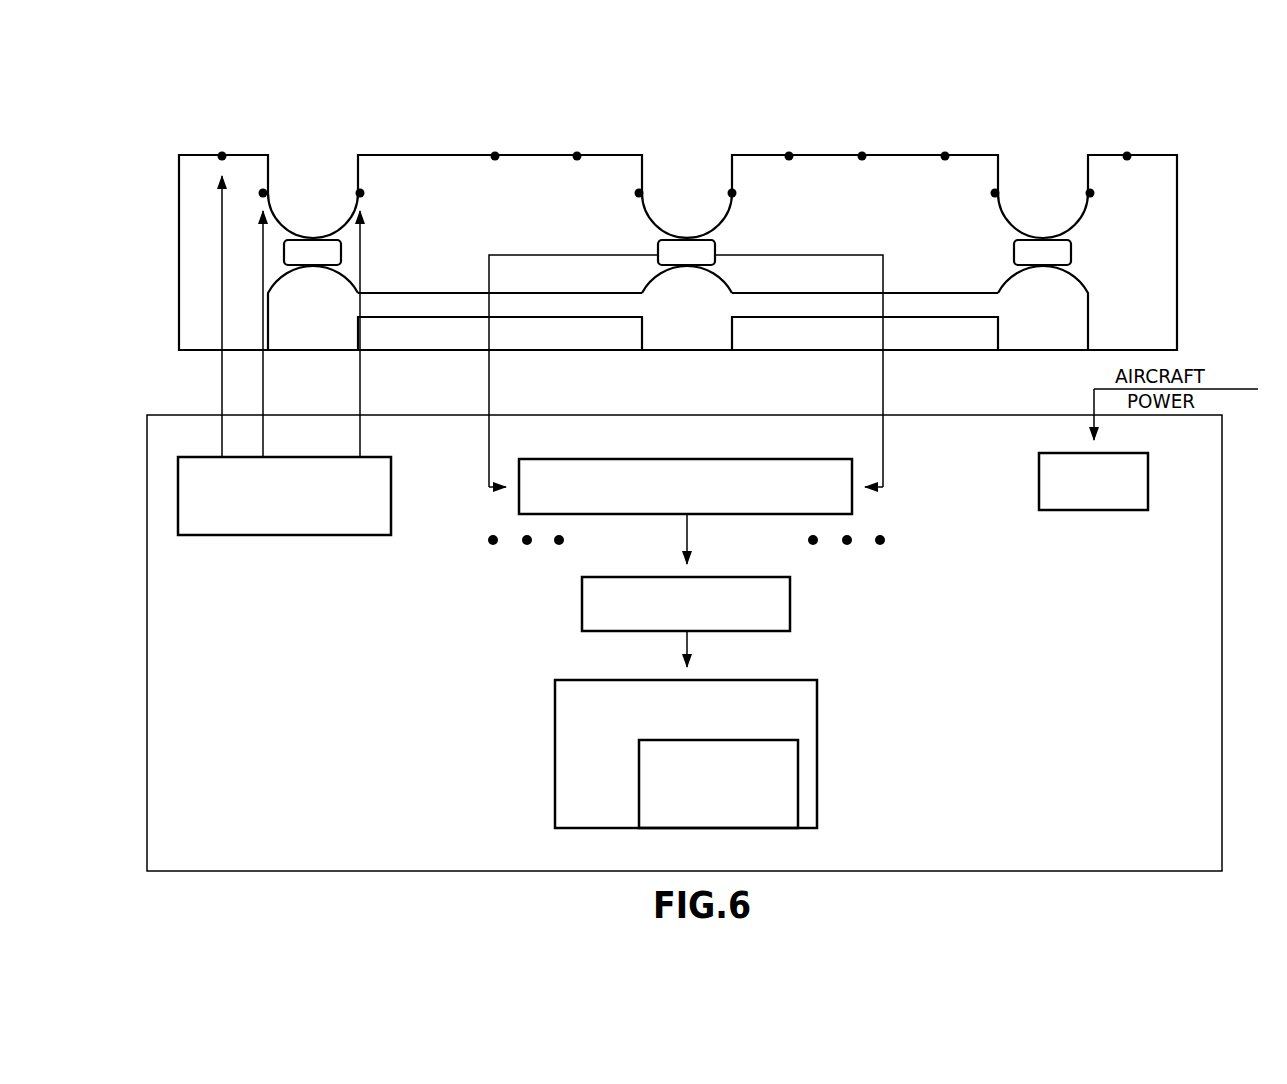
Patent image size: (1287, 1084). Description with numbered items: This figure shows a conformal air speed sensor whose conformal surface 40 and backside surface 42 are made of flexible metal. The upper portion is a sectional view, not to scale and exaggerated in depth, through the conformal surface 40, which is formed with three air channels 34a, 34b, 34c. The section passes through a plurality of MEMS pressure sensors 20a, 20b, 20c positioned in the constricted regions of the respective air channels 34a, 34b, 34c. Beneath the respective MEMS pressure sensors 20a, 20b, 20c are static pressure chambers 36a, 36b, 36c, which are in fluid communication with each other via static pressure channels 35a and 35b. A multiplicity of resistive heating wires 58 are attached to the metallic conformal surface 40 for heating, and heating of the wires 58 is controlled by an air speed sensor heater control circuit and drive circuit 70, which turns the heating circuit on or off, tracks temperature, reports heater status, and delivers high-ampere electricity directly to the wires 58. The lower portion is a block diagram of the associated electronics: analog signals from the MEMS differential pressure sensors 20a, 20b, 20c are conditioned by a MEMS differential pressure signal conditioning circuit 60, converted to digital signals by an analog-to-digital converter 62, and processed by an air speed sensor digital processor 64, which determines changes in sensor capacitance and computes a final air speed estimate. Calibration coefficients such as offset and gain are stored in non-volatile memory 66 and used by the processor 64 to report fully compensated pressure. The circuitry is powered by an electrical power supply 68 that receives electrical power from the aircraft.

The MEMS pressure sensor 20a is at (307, 256).
The MEMS pressure sensor 20b is at (681, 250).
The MEMS pressure sensor 20c is at (1055, 252).
The air channel 34a is at (265, 263).
The air channel 34b is at (689, 257).
The air channel 34c is at (1120, 257).
The static pressure channel 35a is at (553, 303).
The static pressure channel 35b is at (911, 306).
The static pressure chamber 36a is at (292, 346).
The static pressure chamber 36b is at (665, 350).
The static pressure chamber 36c is at (1067, 345).
The conformal surface 40 is at (842, 152).
The backside surface 42 is at (931, 352).
The resistive heating wires 58 is at (577, 152).
The MEMS differential pressure signal conditioning circuit 60 is at (784, 458).
The analog-to-digital converter 62 is at (793, 598).
The air speed sensor digital processor 64 is at (710, 754).
The non-volatile memory 66 is at (800, 790).
The electrical power supply 68 is at (1103, 512).
The air speed sensor heater control circuit and drive circuit 70 is at (318, 537).